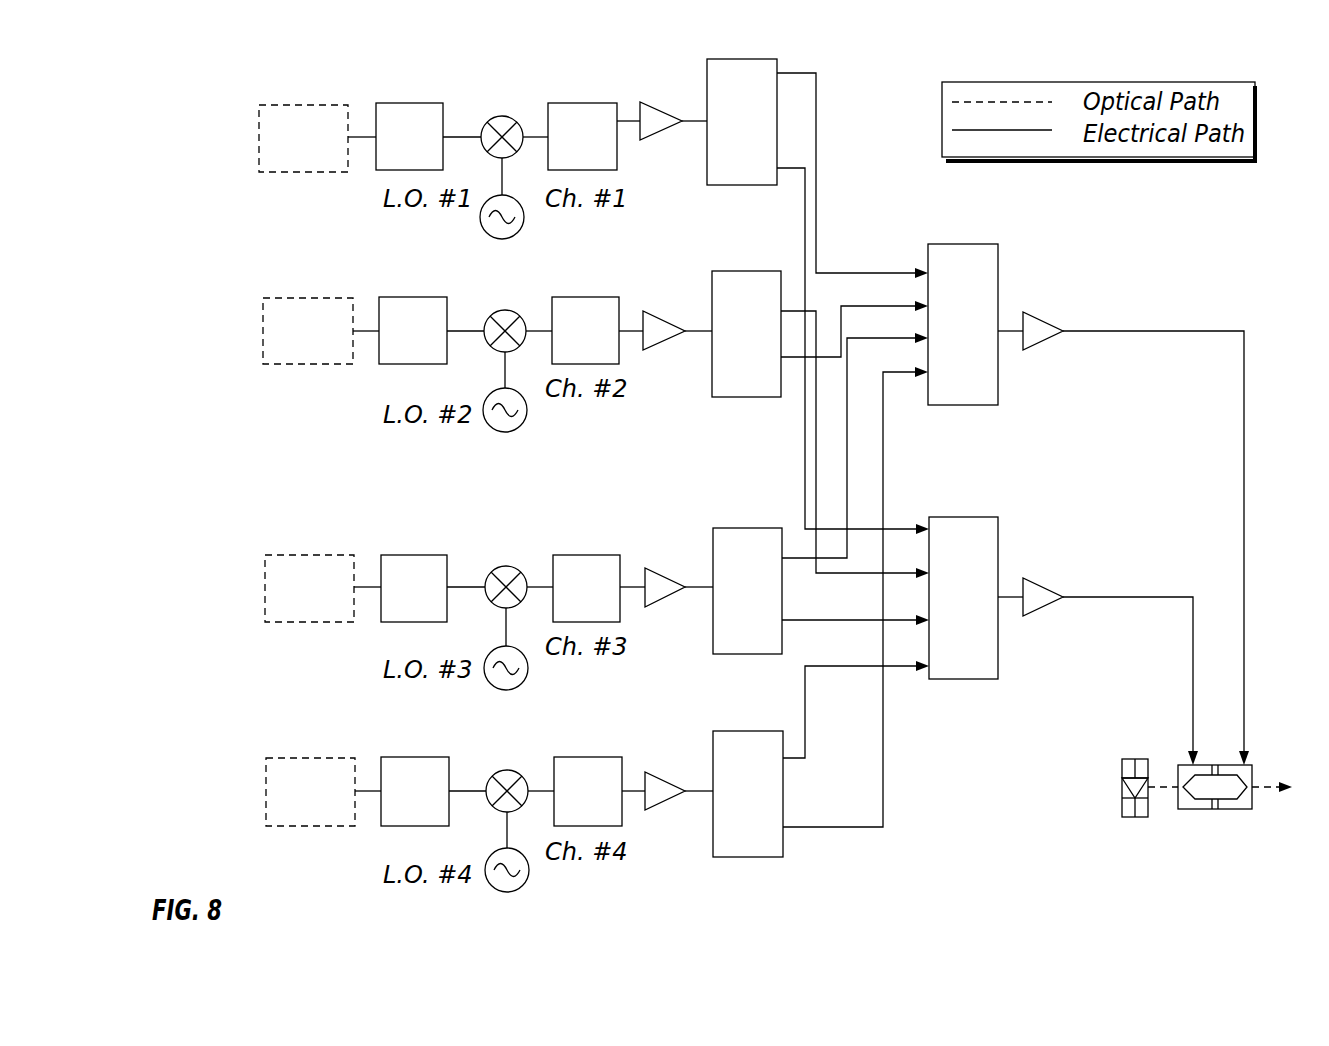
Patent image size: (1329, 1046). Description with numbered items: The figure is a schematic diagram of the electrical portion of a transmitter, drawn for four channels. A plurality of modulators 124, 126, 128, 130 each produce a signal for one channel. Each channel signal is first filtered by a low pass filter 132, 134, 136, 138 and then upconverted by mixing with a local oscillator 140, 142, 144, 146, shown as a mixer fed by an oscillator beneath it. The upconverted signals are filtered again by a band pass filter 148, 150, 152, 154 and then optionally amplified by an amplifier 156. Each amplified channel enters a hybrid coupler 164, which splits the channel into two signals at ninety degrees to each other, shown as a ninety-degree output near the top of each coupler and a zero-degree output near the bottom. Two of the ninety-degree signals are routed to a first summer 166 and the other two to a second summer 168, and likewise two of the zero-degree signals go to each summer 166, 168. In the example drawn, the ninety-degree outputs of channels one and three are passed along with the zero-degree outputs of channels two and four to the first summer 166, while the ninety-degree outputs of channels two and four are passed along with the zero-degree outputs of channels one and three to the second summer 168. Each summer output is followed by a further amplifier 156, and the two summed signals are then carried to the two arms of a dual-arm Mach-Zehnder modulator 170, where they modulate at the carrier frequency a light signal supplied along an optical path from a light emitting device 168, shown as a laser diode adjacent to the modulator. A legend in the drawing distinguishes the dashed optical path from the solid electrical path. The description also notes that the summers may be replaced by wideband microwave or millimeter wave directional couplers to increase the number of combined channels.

The modulator 124 is at (324, 151).
The modulator 126 is at (328, 345).
The modulator 128 is at (330, 601).
The modulator 130 is at (331, 805).
The low pass filter 132 is at (430, 151).
The low pass filter 134 is at (433, 345).
The low pass filter 136 is at (434, 601).
The low pass filter 138 is at (435, 805).
The local oscillator 140 is at (498, 115).
The local oscillator 142 is at (514, 431).
The local oscillator 144 is at (515, 689).
The local oscillator 146 is at (516, 891).
The band pass filter 148 is at (603, 151).
The band pass filter 150 is at (606, 345).
The band pass filter 152 is at (607, 601).
The band pass filter 154 is at (608, 805).
The amplifier 156 is at (646, 141).
The hybrid coupler 164 is at (735, 59).
The first summer 166 is at (950, 244).
The second summer 168 is at (950, 517).
The dual-arm Mach-Zehnder modulator 170 is at (1232, 809).